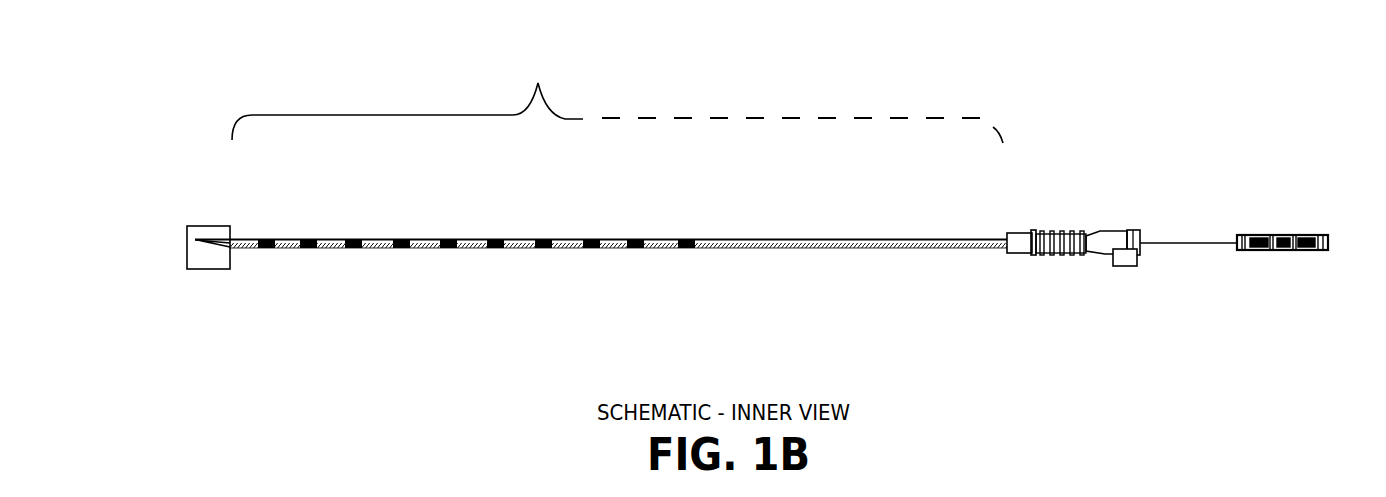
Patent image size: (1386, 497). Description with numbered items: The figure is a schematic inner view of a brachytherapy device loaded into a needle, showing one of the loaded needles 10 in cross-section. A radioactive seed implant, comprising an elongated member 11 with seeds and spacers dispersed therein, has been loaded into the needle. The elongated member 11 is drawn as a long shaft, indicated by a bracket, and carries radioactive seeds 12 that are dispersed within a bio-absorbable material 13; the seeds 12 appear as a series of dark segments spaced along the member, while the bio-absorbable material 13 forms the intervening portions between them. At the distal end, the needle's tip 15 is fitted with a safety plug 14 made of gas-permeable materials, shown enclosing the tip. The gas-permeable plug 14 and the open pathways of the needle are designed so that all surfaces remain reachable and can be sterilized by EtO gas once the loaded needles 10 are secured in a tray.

The loaded needle 10 is at (1120, 228).
The elongated member 11 is at (617, 94).
The radioactive seeds 12 is at (267, 235).
The bio-absorbable material 13 is at (290, 252).
The safety plug 14 is at (217, 253).
The needle tip 15 is at (232, 237).